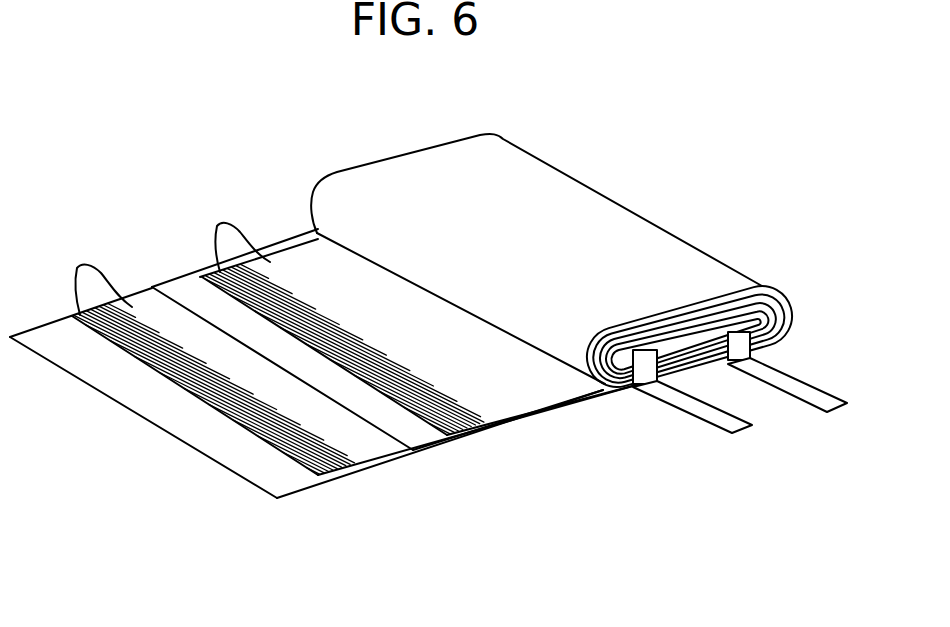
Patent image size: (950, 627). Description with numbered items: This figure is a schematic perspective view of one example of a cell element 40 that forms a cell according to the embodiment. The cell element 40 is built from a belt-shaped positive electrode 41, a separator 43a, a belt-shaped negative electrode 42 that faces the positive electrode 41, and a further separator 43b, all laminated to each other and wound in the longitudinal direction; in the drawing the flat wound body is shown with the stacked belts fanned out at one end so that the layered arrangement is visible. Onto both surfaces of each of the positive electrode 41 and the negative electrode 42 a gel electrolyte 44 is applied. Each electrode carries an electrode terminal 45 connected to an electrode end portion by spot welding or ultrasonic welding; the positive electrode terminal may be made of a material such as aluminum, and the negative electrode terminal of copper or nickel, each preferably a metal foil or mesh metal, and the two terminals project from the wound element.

The cell element 40 is at (442, 293).
The positive electrode 41 is at (490, 417).
The negative electrode 42 is at (353, 468).
The separator 43a is at (423, 433).
The separator 43b is at (288, 484).
The gel electrolyte 44 is at (76, 270).
The electrode terminal 45 is at (748, 430).